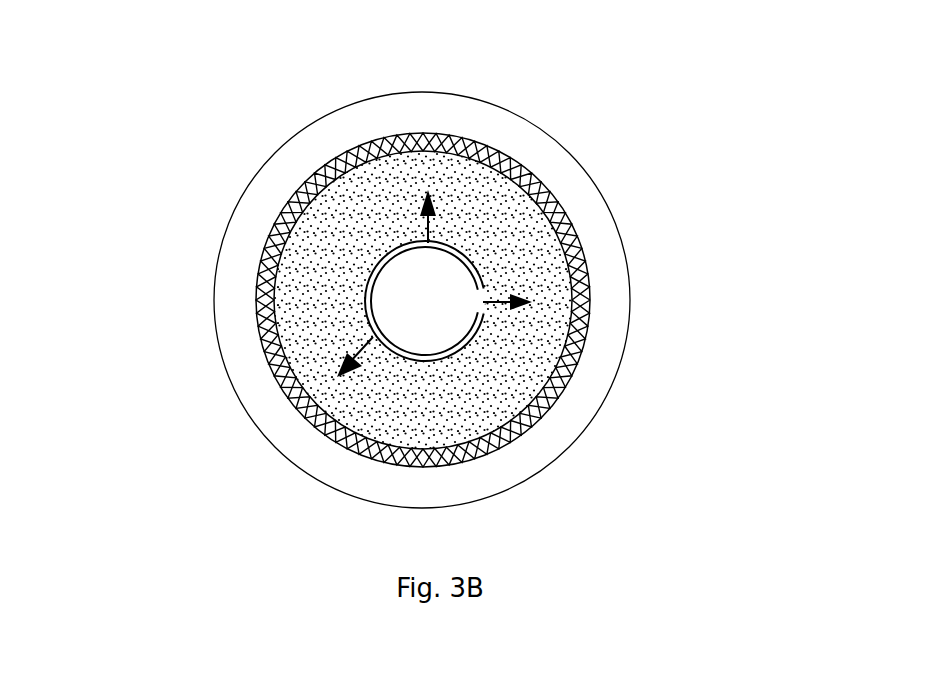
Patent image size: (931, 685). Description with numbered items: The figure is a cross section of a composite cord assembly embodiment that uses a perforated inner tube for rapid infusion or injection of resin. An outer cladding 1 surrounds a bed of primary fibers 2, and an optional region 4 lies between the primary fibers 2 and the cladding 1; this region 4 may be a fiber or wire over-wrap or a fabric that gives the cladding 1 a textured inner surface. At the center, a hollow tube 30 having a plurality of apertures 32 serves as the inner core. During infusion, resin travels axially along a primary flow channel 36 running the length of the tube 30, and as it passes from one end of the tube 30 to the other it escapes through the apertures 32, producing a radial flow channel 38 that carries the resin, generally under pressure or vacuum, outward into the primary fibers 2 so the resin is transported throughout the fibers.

The cladding 1 is at (480, 122).
The primary fibers 2 is at (488, 370).
The region 4 is at (327, 170).
The hollow tube 30 is at (366, 289).
The apertures 32 is at (427, 243).
The primary flow channel 36 is at (408, 305).
The radial flow channel 38 is at (430, 217).